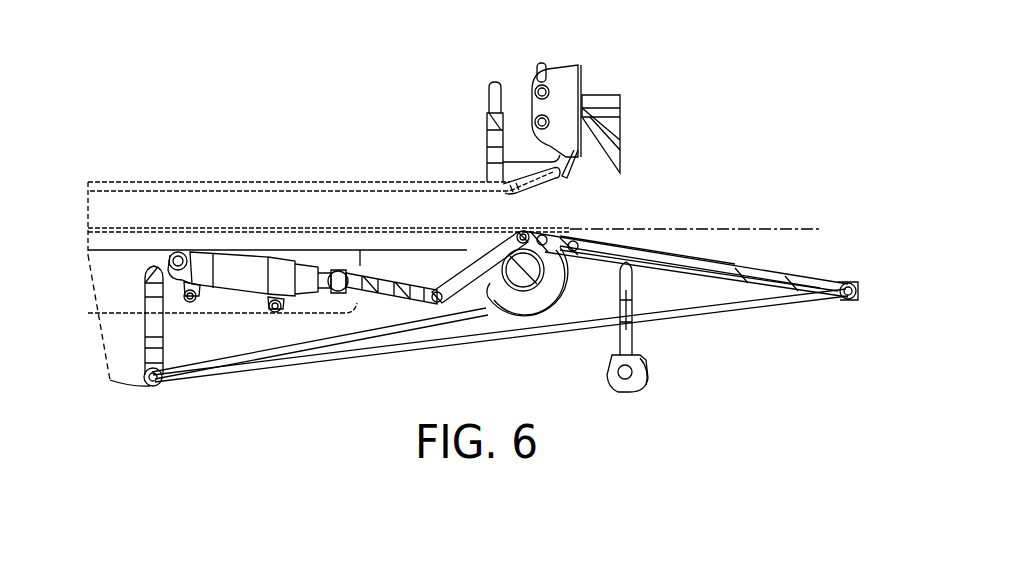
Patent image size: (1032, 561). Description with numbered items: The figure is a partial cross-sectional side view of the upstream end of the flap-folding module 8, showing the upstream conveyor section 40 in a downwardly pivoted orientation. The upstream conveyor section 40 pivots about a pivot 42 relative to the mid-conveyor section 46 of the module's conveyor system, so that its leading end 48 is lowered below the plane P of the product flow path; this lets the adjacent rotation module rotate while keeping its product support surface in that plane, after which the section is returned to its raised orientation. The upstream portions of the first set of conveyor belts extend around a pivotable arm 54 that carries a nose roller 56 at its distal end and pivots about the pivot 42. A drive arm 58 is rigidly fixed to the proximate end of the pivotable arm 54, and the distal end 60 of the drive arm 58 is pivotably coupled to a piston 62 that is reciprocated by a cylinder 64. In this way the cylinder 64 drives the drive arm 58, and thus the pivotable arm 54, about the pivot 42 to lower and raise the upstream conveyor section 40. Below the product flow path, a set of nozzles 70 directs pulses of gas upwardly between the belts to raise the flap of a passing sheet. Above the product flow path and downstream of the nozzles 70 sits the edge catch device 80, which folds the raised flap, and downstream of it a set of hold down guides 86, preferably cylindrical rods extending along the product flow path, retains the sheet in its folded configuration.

The flap-folding module 8 is at (783, 123).
The edge catch device 80 is at (628, 73).
The hold down guides 86 is at (288, 182).
The plane of the product flow path P is at (776, 229).
The mid-conveyor section 46 is at (92, 240).
The cylinder 64 is at (242, 273).
The piston 62 is at (407, 284).
The distal end of the drive arm 60 is at (437, 303).
The pivot 42 is at (528, 233).
The drive arm 58 is at (460, 282).
The pivotable arm 54 is at (790, 283).
The upstream conveyor section 40 is at (740, 268).
The nose roller 56 is at (852, 299).
The leading end 48 is at (856, 286).
The nozzles 70 is at (628, 318).